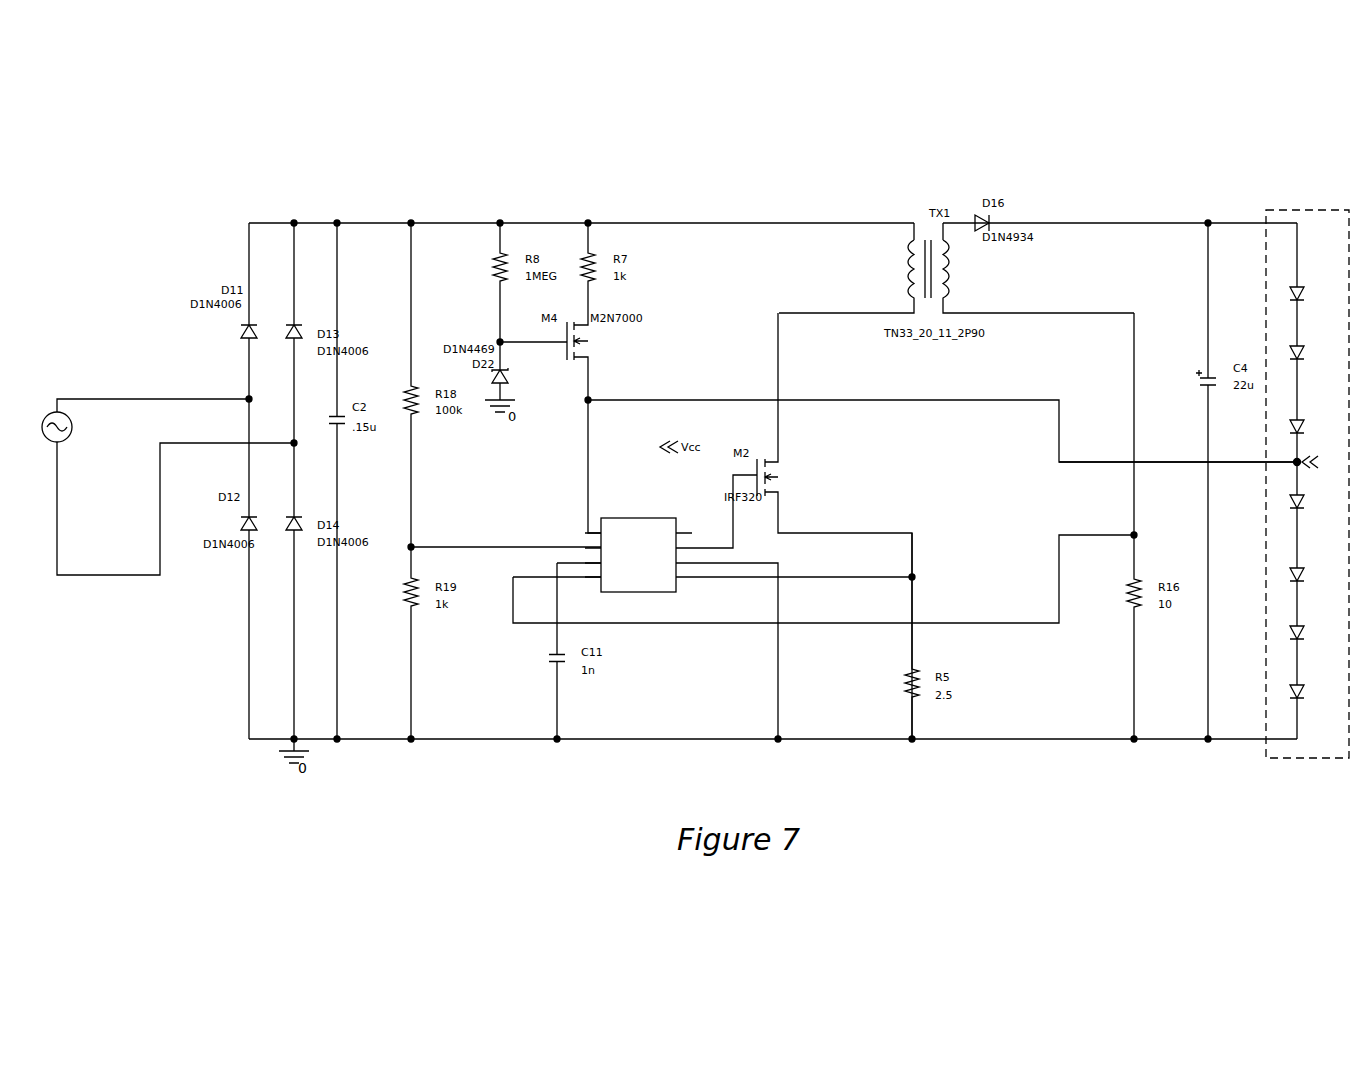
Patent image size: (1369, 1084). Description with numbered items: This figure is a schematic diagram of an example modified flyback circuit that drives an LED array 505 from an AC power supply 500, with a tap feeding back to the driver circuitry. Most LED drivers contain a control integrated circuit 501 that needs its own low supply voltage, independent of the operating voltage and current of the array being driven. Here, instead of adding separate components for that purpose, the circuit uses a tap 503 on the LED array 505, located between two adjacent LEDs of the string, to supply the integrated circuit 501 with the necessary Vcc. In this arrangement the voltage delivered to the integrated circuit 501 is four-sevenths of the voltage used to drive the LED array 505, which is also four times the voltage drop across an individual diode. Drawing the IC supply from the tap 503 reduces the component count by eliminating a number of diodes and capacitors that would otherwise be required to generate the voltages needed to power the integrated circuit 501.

The AC power supply 500 is at (72, 428).
The integrated circuit 501 is at (645, 516).
The tap 503 is at (1296, 461).
The LED array 505 is at (1267, 208).